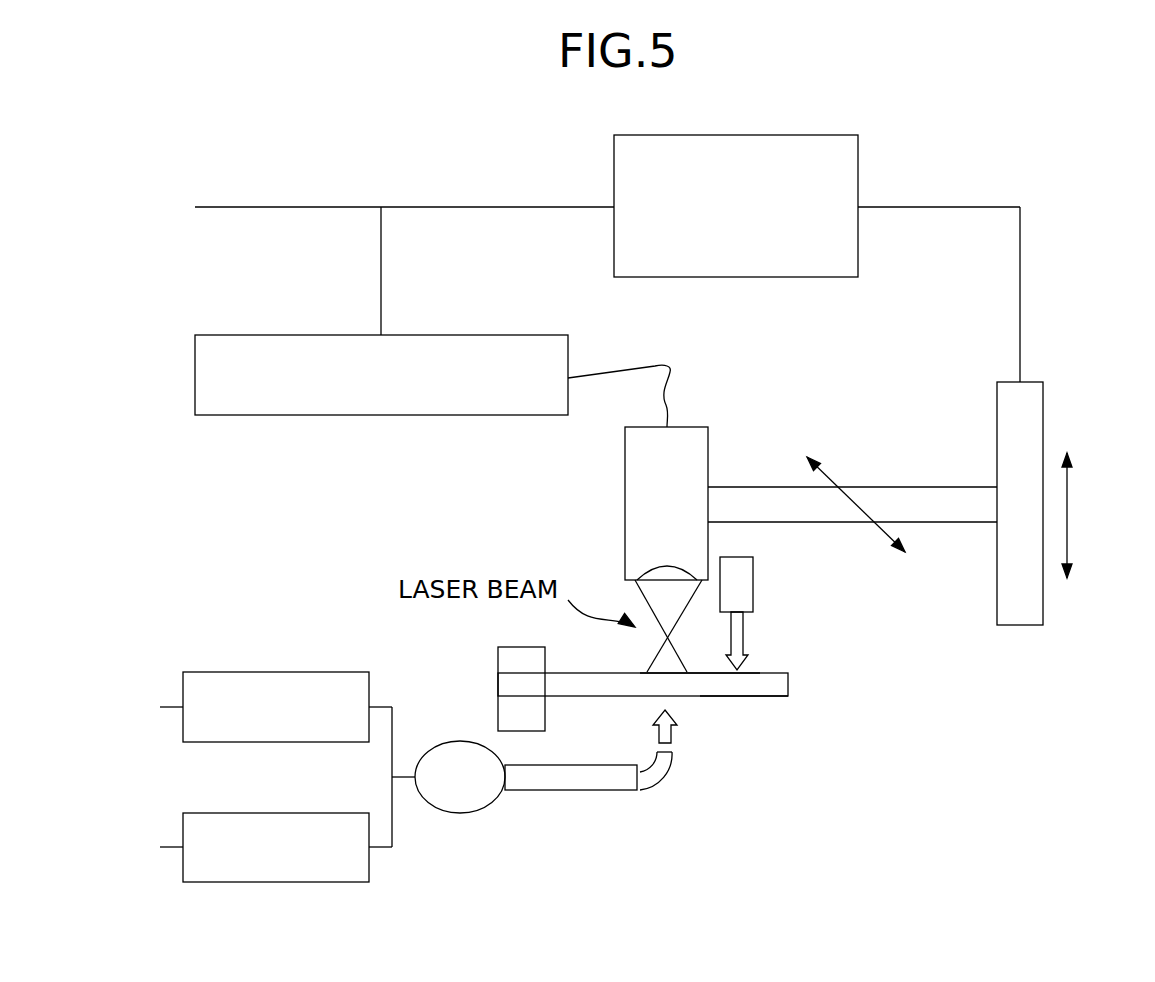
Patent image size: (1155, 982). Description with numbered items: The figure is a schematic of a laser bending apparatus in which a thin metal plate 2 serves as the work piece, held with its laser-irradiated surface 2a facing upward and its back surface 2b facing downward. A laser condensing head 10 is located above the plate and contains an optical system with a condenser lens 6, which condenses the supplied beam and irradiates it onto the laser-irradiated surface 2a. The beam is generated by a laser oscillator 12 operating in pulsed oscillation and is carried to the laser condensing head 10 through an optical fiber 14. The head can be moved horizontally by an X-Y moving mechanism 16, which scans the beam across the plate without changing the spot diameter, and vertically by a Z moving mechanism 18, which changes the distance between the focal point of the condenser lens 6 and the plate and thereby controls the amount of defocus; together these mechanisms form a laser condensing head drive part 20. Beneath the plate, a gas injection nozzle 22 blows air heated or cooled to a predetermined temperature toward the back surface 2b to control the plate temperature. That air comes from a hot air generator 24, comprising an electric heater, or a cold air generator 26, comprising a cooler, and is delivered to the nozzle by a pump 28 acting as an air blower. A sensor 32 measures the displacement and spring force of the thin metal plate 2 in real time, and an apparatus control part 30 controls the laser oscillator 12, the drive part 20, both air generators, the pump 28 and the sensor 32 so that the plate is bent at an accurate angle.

The thin metal plate 2 is at (813, 683).
The laser-irradiated surface 2a is at (757, 672).
The back surface 2b is at (737, 697).
The condenser lens 6 is at (650, 567).
The laser condensing head 10 is at (687, 427).
The laser oscillator 12 is at (274, 335).
The optical fiber 14 is at (618, 368).
The X-Y moving mechanism 16 is at (830, 436).
The Z moving mechanism 18 is at (1086, 505).
The laser condensing head drive part 20 is at (1046, 355).
The gas injection nozzle 22 is at (660, 768).
The hot air generator 24 is at (295, 672).
The cold air generator 26 is at (295, 813).
The pump 28 is at (463, 813).
The apparatus control part 30 is at (614, 153).
The sensor 32 is at (754, 568).